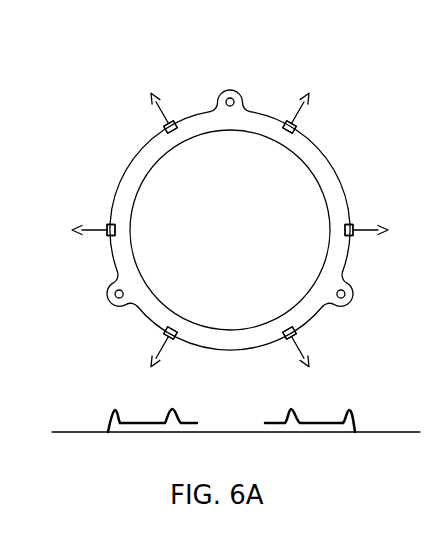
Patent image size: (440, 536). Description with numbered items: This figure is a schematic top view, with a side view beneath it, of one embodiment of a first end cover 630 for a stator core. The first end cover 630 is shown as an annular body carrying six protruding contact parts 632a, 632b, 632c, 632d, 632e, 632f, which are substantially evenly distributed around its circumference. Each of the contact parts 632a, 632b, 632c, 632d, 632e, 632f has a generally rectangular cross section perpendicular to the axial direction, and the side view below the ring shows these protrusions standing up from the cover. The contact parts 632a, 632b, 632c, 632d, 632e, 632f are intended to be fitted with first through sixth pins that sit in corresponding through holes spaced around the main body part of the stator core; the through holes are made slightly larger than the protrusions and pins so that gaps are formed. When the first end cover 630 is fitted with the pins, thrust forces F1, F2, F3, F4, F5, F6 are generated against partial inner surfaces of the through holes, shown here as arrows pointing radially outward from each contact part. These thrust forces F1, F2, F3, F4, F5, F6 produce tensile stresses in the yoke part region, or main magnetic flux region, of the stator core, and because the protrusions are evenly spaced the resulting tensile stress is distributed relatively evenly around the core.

The first end cover 630 is at (264, 56).
The contact part 632a is at (288, 130).
The contact part 632b is at (345, 231).
The contact part 632c is at (286, 326).
The contact part 632d is at (174, 330).
The contact part 632e is at (116, 231).
The contact part 632f is at (175, 130).
The thrust force F1 is at (82, 232).
The thrust force F2 is at (154, 363).
The thrust force F3 is at (305, 363).
The thrust force F4 is at (380, 232).
The thrust force F5 is at (304, 102).
The thrust force F6 is at (155, 102).